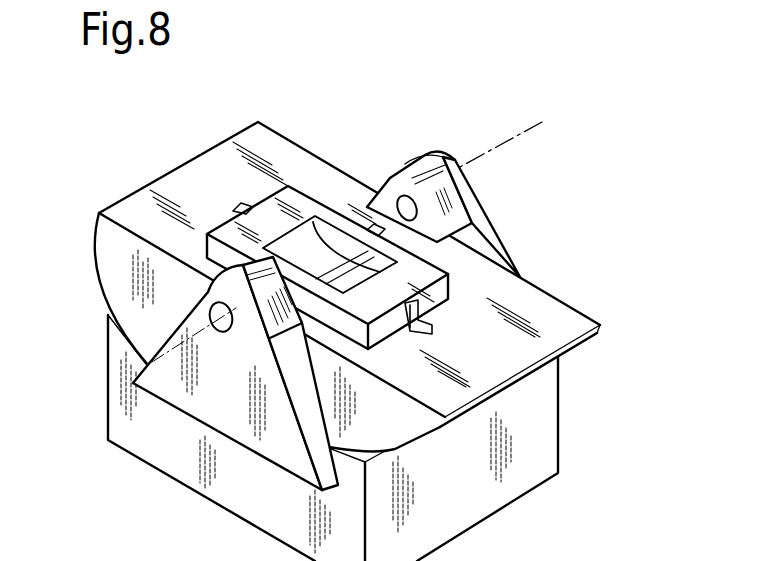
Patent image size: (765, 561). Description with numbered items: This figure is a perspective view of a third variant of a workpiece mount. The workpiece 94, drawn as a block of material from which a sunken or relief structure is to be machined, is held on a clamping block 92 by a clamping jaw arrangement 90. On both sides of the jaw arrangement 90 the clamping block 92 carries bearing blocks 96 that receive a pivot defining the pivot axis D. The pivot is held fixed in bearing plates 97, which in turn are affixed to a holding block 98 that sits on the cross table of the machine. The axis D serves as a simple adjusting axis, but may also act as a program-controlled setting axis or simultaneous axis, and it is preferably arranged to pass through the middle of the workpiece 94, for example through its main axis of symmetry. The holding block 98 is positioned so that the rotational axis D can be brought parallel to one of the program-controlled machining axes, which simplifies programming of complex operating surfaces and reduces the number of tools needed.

The clamping jaw arrangement 90 is at (371, 232).
The clamping block 92 is at (492, 320).
The workpiece 94 is at (446, 276).
The bearing blocks 96 is at (233, 275).
The bearing plates 97 is at (210, 387).
The holding block 98 is at (528, 429).
The pivot axis D is at (513, 140).